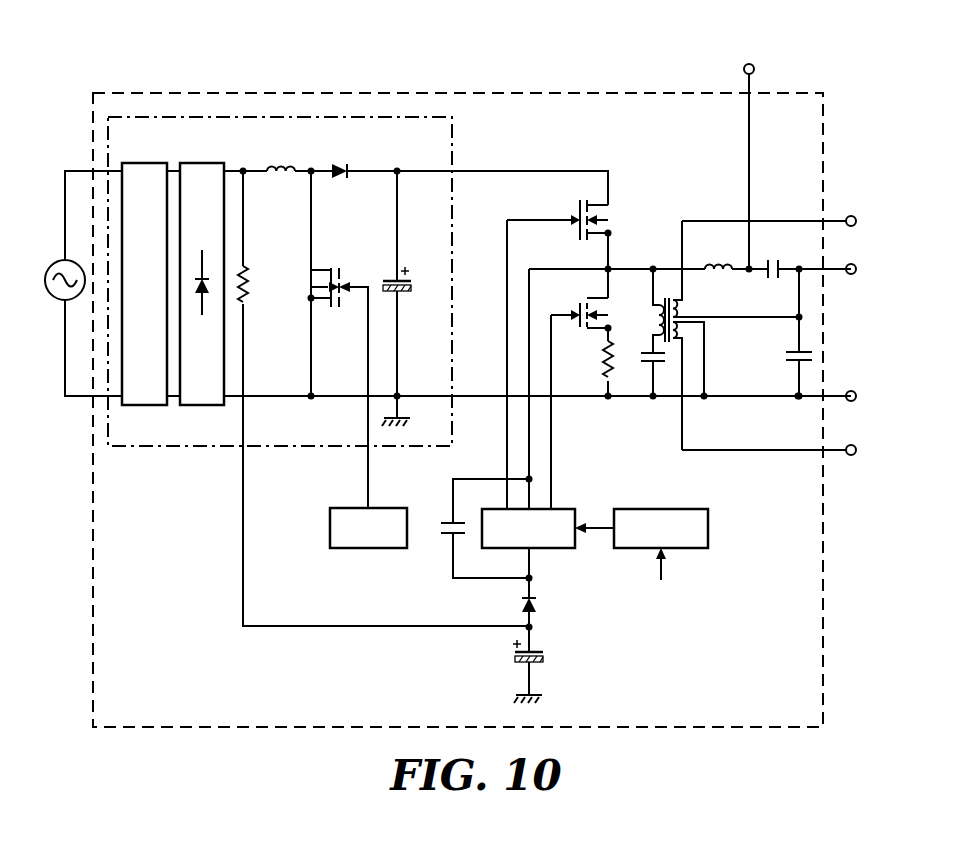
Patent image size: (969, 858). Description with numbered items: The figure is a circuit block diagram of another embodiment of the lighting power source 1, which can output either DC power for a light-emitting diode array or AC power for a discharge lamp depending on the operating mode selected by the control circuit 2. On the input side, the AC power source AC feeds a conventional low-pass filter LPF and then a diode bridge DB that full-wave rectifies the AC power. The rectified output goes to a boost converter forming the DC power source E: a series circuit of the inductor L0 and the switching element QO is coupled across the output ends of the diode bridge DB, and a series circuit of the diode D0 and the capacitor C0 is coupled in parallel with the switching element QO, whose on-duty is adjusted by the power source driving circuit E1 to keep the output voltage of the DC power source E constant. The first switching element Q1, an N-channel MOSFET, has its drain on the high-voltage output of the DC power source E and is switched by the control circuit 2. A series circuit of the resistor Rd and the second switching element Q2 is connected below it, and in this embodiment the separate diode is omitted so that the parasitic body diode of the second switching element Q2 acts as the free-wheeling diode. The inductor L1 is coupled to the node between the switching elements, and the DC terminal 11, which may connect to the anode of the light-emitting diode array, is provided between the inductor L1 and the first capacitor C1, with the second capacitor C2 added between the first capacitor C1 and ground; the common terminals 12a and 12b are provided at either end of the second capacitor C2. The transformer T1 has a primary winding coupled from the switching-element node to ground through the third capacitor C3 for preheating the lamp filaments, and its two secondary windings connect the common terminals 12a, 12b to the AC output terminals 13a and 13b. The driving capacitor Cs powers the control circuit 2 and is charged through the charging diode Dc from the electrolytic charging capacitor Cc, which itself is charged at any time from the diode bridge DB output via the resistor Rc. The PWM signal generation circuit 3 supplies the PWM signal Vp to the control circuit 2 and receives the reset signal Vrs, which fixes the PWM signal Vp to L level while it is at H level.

The lighting power source 1 is at (823, 147).
The control circuit 2 is at (553, 548).
The PWM signal generation circuit 3 is at (660, 509).
The DC terminal 11 is at (755, 68).
The common terminal 12a is at (857, 268).
The common terminal 12b is at (857, 395).
The AC output terminal 13a is at (857, 220).
The AC output terminal 13b is at (857, 449).
The DC power source E is at (163, 447).
The power source driving circuit E1 is at (355, 548).
The AC power source AC is at (74, 283).
The low-pass filter LPF is at (151, 271).
The diode bridge DB is at (202, 271).
The inductor L0 is at (281, 154).
The diode D0 is at (354, 157).
The switching element QO is at (338, 339).
The resistor Rc is at (383, 397).
The capacitor C0 is at (407, 298).
The first switching element Q1 is at (609, 249).
The second switching element Q2 is at (582, 304).
The resistor Rd is at (592, 364).
The transformer T1 is at (712, 335).
The third capacitor C3 is at (643, 367).
The inductor L1 is at (718, 252).
The first capacitor C1 is at (774, 256).
The second capacitor C2 is at (783, 334).
The driving capacitor Cs is at (478, 529).
The charging diode Dc is at (547, 600).
The charging capacitor Cc is at (544, 671).
The PWM signal Vp is at (594, 517).
The reset signal Vrs is at (661, 582).